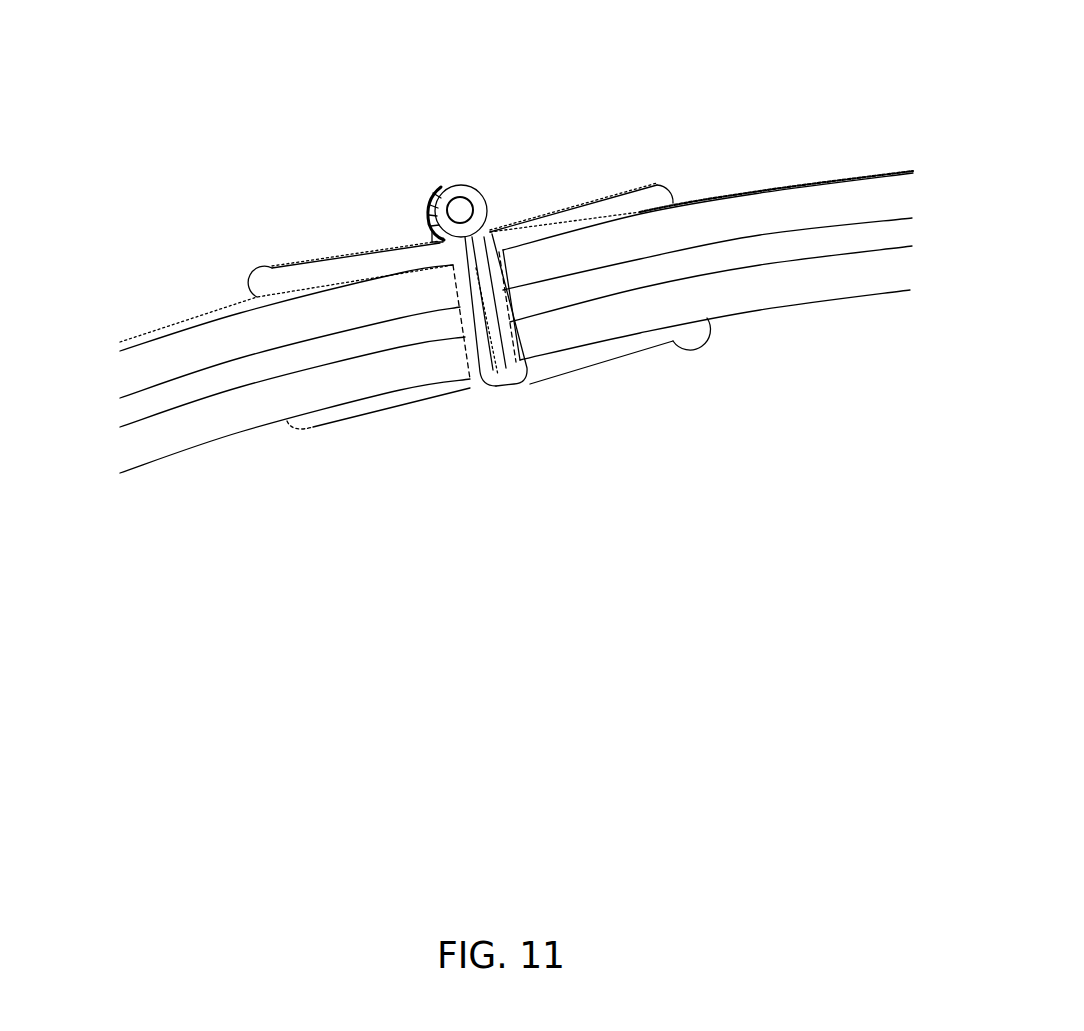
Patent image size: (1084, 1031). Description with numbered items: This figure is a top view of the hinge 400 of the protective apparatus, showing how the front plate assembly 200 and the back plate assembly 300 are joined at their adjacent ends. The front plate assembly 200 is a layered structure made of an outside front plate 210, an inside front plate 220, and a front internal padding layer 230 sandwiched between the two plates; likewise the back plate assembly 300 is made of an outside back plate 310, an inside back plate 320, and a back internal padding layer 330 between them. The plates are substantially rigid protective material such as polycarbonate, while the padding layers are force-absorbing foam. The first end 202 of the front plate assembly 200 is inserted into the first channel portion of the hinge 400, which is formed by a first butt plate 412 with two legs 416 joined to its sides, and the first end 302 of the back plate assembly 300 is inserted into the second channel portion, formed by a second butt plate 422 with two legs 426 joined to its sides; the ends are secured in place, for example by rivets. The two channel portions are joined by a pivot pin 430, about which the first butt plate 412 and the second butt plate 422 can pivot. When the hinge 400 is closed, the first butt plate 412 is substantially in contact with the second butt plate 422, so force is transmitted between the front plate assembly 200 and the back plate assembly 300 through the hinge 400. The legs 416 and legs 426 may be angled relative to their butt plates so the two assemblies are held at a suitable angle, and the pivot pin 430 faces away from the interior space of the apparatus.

The front plate assembly 200 is at (258, 411).
The first end of the front plate assembly 202 is at (418, 290).
The outside front plate 210 is at (212, 428).
The inside front plate 220 is at (177, 345).
The front internal padding layer 230 is at (130, 407).
The back plate assembly 300 is at (724, 242).
The first end of the back plate assembly 302 is at (616, 228).
The outside back plate 310 is at (878, 283).
The inside back plate 320 is at (837, 203).
The back internal padding layer 330 is at (900, 232).
The hinge 400 is at (484, 234).
The first butt plate 412 is at (482, 355).
The legs of the first channel portion 416 is at (300, 275).
The second butt plate 422 is at (512, 345).
The legs of the second channel portion 426 is at (653, 202).
The pivot pin 430 is at (460, 210).